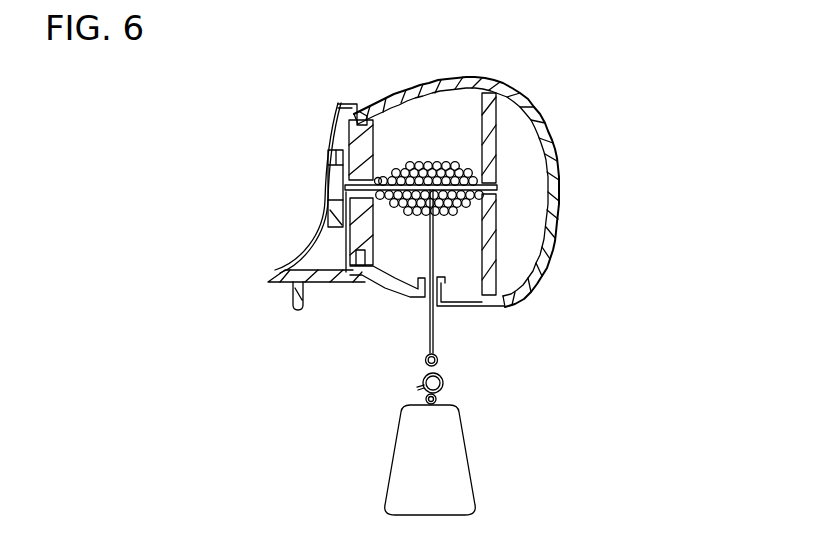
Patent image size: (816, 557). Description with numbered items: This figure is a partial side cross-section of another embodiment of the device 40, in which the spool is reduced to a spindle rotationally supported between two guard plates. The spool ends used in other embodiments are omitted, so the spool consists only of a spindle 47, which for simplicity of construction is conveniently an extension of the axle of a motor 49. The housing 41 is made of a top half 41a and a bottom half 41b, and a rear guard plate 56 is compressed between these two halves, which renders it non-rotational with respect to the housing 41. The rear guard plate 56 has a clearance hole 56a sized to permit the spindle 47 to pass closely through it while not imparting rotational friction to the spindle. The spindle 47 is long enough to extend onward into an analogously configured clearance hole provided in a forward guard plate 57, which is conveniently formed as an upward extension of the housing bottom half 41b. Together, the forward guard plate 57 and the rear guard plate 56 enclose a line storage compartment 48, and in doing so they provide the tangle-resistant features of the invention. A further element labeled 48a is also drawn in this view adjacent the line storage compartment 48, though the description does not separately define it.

The device 40 is at (568, 190).
The housing 41 is at (162, 75).
The top half of housing 41a is at (390, 96).
The bottom half of housing 41b is at (335, 272).
The spindle 47 is at (432, 187).
The line storage compartment 48 is at (455, 265).
The container partition wall 48a is at (493, 168).
The motor 49 is at (327, 190).
The rear guard plate 56 is at (373, 158).
The clearance hole 56a is at (376, 197).
The forward guard plate 57 is at (488, 247).